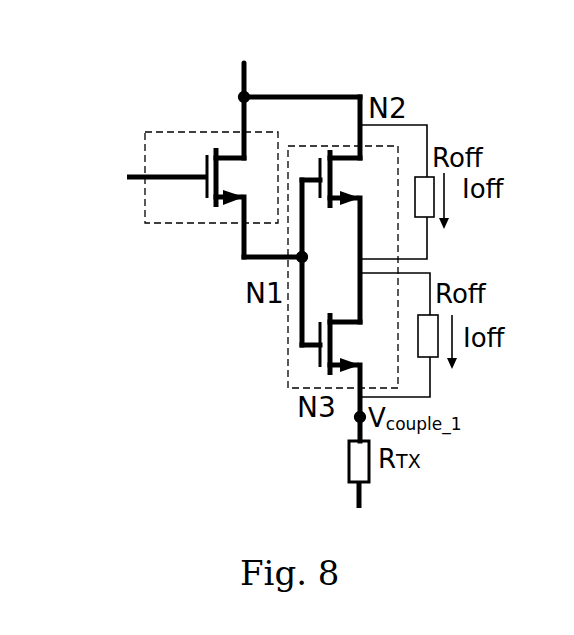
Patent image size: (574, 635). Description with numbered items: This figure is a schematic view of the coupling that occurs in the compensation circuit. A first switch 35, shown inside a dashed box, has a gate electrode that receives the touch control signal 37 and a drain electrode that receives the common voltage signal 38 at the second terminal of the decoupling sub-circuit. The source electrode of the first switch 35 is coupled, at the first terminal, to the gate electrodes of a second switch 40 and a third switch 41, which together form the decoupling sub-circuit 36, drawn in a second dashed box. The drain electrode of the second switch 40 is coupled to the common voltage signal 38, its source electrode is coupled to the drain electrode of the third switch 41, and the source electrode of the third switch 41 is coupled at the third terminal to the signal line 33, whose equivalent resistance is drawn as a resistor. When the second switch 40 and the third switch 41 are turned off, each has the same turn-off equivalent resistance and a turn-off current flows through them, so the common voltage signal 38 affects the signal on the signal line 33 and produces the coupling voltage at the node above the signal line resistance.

The signal line 33 is at (318, 483).
The first switch 35 is at (145, 223).
The decoupling sub-circuit 36 is at (288, 345).
The touch control signal 37 is at (139, 177).
The common voltage signal 38 is at (234, 48).
The second switch 40 is at (345, 179).
The third switch 41 is at (345, 344).